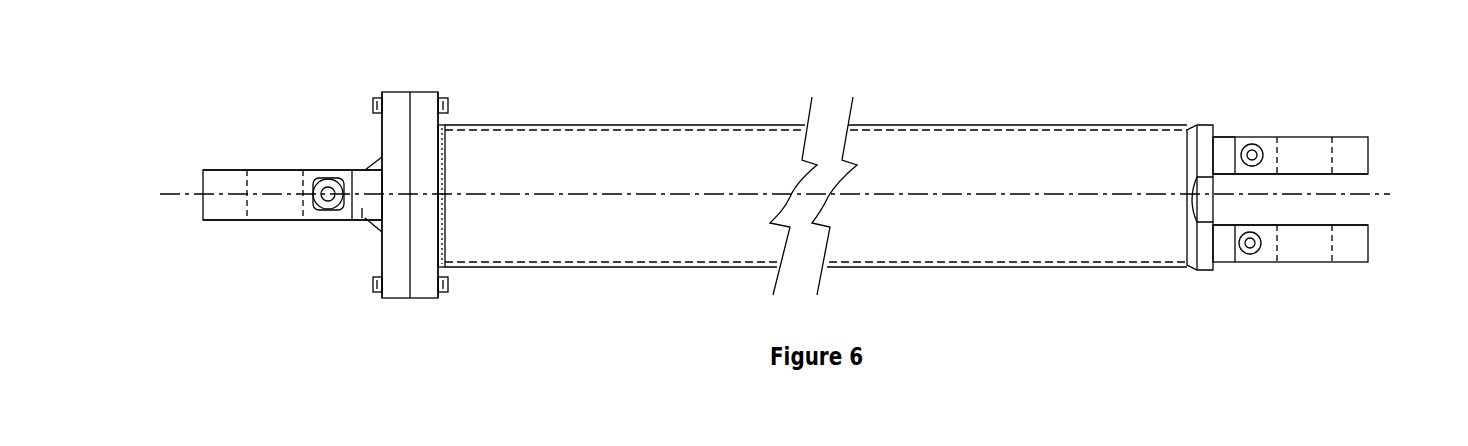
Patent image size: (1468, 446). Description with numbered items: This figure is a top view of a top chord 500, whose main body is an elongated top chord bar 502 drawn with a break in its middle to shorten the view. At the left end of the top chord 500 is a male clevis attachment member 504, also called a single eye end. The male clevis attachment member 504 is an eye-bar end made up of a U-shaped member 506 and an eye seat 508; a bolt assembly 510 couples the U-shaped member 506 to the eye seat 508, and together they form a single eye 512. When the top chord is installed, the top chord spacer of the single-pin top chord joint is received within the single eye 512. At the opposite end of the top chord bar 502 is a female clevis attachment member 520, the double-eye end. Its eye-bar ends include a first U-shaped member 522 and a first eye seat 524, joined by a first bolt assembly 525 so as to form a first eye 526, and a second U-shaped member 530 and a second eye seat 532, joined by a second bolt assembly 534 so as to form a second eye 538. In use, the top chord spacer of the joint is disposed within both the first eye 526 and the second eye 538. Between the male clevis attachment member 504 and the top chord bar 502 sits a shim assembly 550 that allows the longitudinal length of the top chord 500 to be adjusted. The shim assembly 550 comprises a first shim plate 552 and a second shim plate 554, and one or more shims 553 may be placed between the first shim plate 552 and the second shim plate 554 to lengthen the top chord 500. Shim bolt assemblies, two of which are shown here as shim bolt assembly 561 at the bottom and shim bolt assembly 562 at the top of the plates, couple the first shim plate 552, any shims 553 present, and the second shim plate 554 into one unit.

The top chord 500 is at (470, 67).
The top chord bar 502 is at (647, 125).
The male clevis attachment member 504 is at (254, 142).
The U-shaped member 506 is at (203, 187).
The eye seat 508 is at (362, 217).
The bolt assembly 510 is at (330, 177).
The single eye 512 is at (267, 233).
The female clevis attachment member 520 is at (1402, 172).
The first U-shaped member 522 is at (1310, 135).
The first eye seat 524 is at (1233, 137).
The first bolt assembly 525 is at (1262, 143).
The first eye 526 is at (1306, 185).
The second U-shaped member 530 is at (1300, 262).
The second eye seat 532 is at (1230, 255).
The second bolt assembly 534 is at (1258, 253).
The second eye 538 is at (1305, 211).
The shim assembly 550 is at (412, 315).
The first shim plate 552 is at (382, 127).
The shim 553 is at (408, 92).
The second shim plate 554 is at (422, 92).
The shim bolt assembly 561 is at (448, 288).
The shim bolt assembly 562 is at (448, 105).